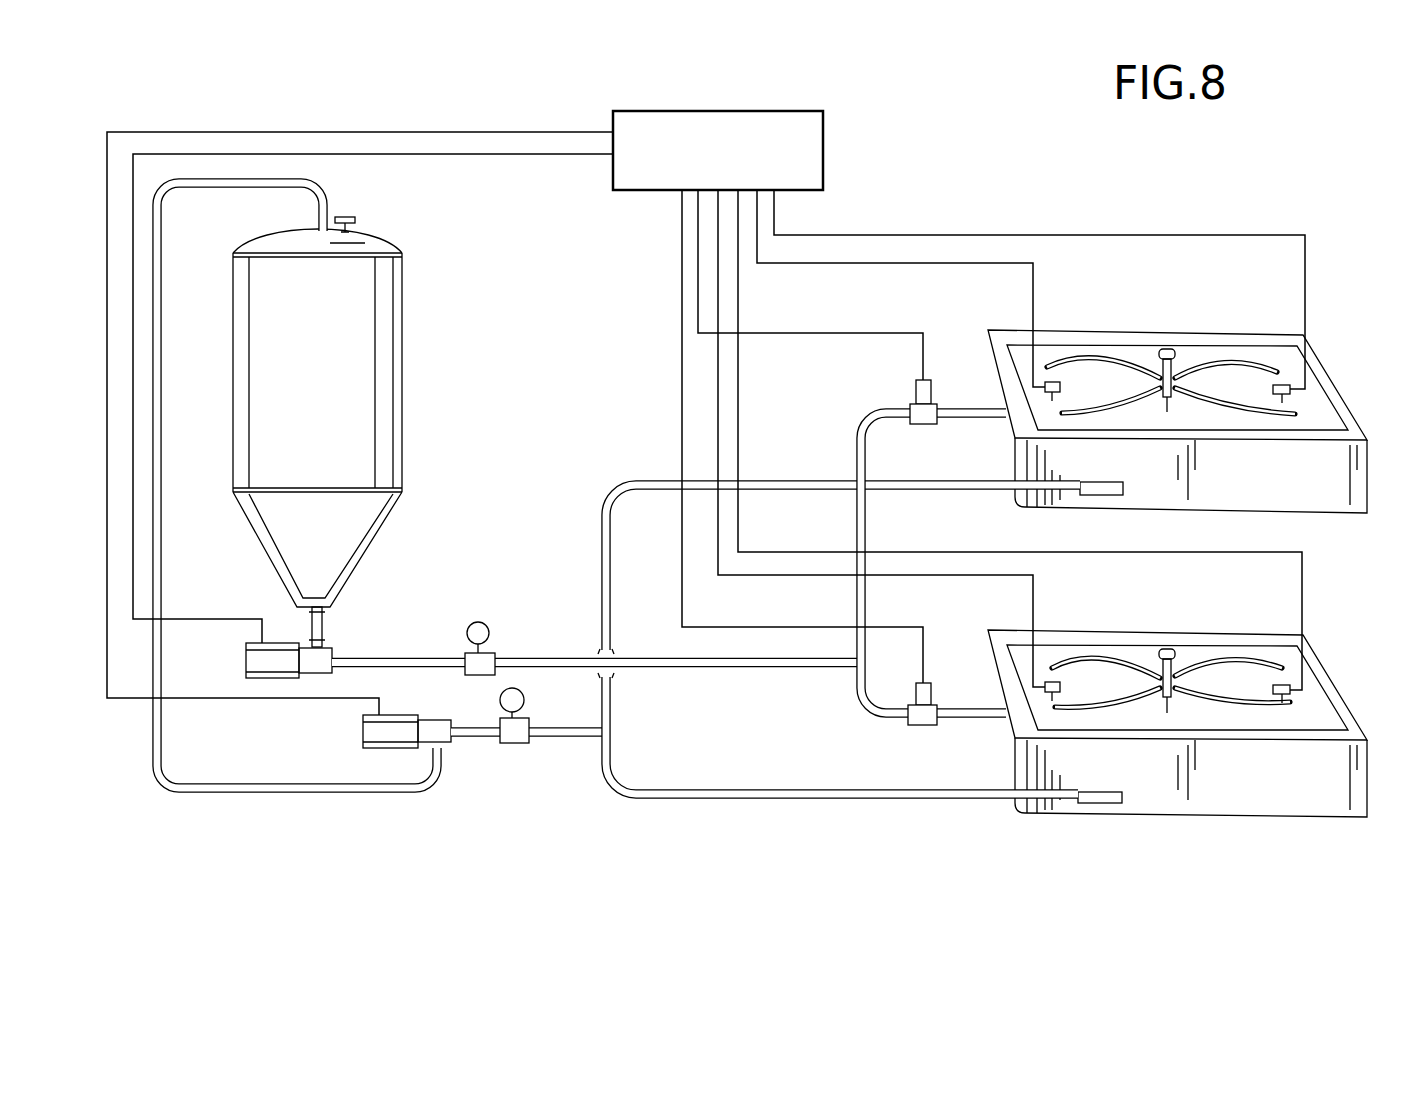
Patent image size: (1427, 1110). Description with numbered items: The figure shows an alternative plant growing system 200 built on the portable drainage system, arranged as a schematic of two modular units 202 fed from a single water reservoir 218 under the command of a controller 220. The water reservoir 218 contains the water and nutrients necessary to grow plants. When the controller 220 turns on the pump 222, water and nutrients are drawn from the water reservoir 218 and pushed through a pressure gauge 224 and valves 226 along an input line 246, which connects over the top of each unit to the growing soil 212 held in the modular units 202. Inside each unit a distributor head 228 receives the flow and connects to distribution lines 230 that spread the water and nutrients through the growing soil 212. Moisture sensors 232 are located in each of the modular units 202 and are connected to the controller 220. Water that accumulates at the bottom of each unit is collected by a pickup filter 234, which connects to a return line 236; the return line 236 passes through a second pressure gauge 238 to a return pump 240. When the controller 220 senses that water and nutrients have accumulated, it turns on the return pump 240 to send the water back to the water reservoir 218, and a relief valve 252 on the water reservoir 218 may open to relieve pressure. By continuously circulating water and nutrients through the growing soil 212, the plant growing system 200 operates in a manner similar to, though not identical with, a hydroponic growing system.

The plant growing system 200 is at (1000, 155).
The modular unit 202 is at (1310, 353).
The growing soil 212 is at (1315, 412).
The water reservoir 218 is at (402, 390).
The controller 220 is at (825, 170).
The pump 222 is at (278, 678).
The pressure gauge 224 is at (482, 621).
The valve 226 is at (915, 410).
The distributor head 228 is at (1172, 360).
The distribution line 230 is at (1108, 392).
The moisture sensor 232 is at (1053, 380).
The pickup filter 234 is at (1112, 495).
The return line 236 is at (925, 492).
The pressure gauge 238 is at (517, 743).
The return pump 240 is at (389, 750).
The input line 246 is at (748, 672).
The relief valve 252 is at (358, 219).